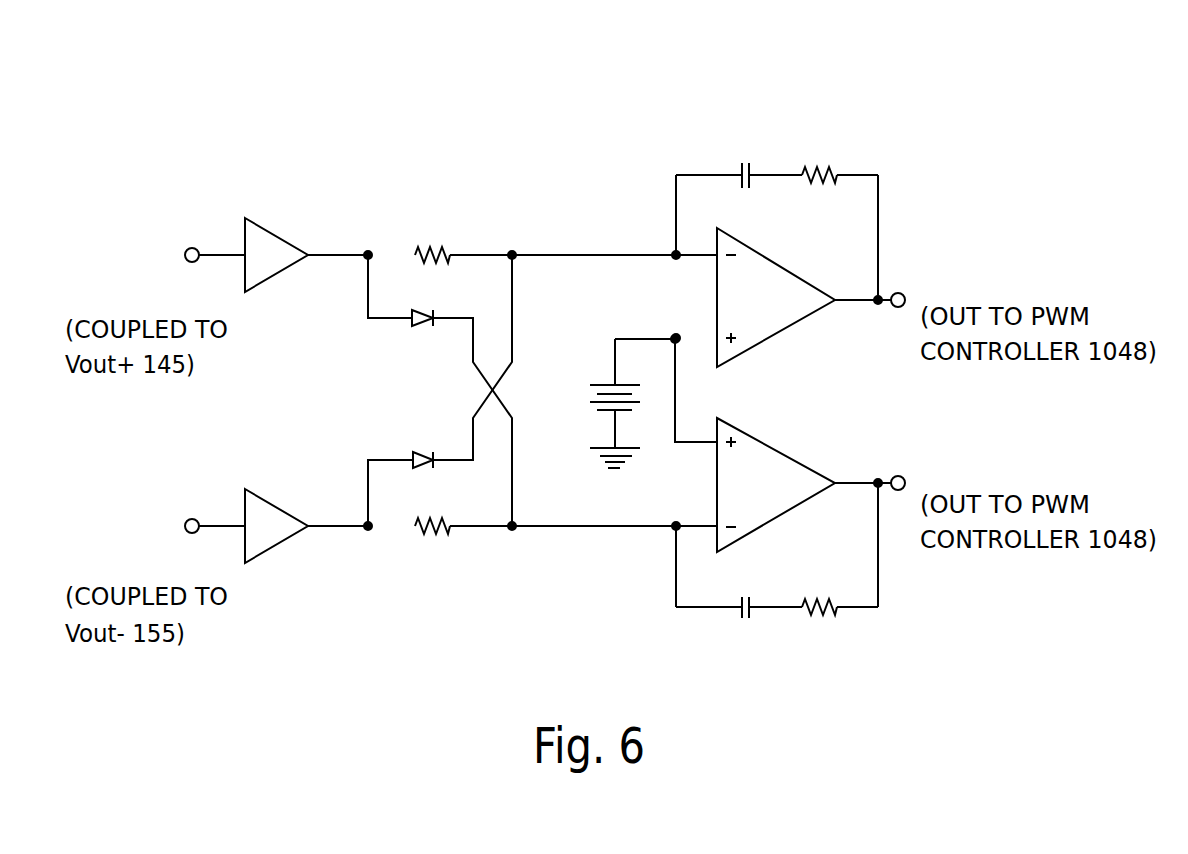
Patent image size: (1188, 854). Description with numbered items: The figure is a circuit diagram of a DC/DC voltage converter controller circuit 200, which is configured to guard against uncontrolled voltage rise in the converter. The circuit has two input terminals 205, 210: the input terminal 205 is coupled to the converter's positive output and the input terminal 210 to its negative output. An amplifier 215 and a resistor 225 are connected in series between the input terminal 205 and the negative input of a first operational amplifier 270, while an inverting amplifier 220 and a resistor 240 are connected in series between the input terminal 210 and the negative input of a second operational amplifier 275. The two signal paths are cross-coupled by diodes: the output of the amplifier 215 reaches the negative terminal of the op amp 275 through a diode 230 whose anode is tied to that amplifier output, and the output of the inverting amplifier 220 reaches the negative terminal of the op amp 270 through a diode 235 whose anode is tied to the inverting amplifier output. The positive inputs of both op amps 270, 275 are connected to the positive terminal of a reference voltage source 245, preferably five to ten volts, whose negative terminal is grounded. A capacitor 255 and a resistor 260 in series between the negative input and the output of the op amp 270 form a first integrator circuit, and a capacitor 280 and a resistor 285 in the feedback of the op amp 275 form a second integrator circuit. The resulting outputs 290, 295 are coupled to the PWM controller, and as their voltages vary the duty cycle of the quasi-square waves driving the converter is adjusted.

The controller circuit 200 is at (612, 348).
The input terminal 205 is at (190, 262).
The input terminal 210 is at (192, 533).
The amplifier 215 is at (263, 282).
The inverting amplifier 220 is at (277, 548).
The resistor 225 is at (443, 248).
The diode 230 is at (417, 330).
The diode 235 is at (410, 458).
The resistor 240 is at (436, 533).
The reference voltage Vref 245 is at (590, 352).
The capacitor 255 is at (740, 170).
The resistor 260 is at (833, 172).
The operational amplifier 270 is at (778, 265).
The operational amplifier 275 is at (785, 450).
The capacitor 280 is at (741, 614).
The resistor 285 is at (832, 612).
The output 290 is at (905, 292).
The output 295 is at (907, 479).